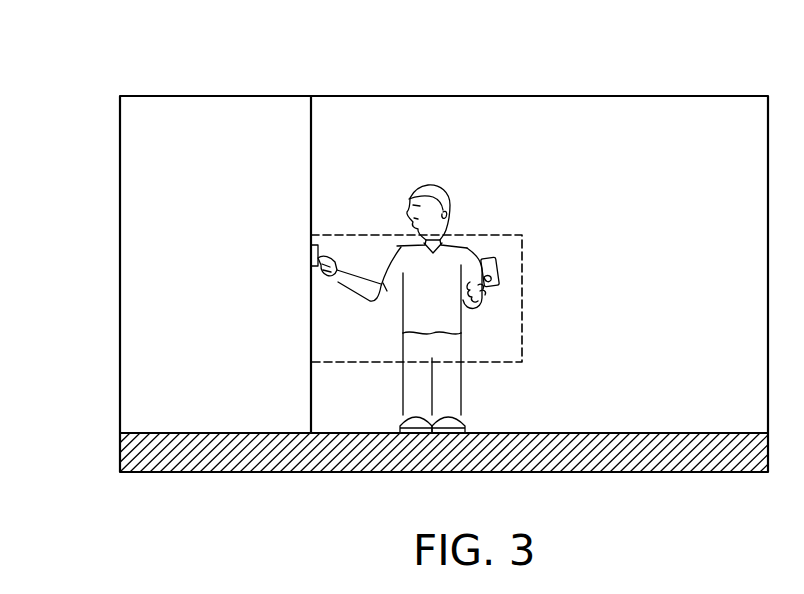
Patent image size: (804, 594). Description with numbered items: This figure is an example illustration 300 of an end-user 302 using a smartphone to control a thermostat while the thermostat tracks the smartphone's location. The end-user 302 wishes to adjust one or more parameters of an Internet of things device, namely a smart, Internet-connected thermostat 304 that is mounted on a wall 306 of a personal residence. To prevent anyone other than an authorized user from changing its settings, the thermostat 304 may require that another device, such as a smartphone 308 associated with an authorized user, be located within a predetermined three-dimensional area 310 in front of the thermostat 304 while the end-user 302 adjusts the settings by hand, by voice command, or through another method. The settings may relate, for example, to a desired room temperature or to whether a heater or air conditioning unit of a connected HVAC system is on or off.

The example illustration 300 is at (112, 58).
The end-user 302 is at (453, 296).
The thermostat 304 is at (311, 256).
The wall 306 is at (120, 128).
The smartphone 308 is at (501, 266).
The three-dimensional area 310 is at (512, 350).